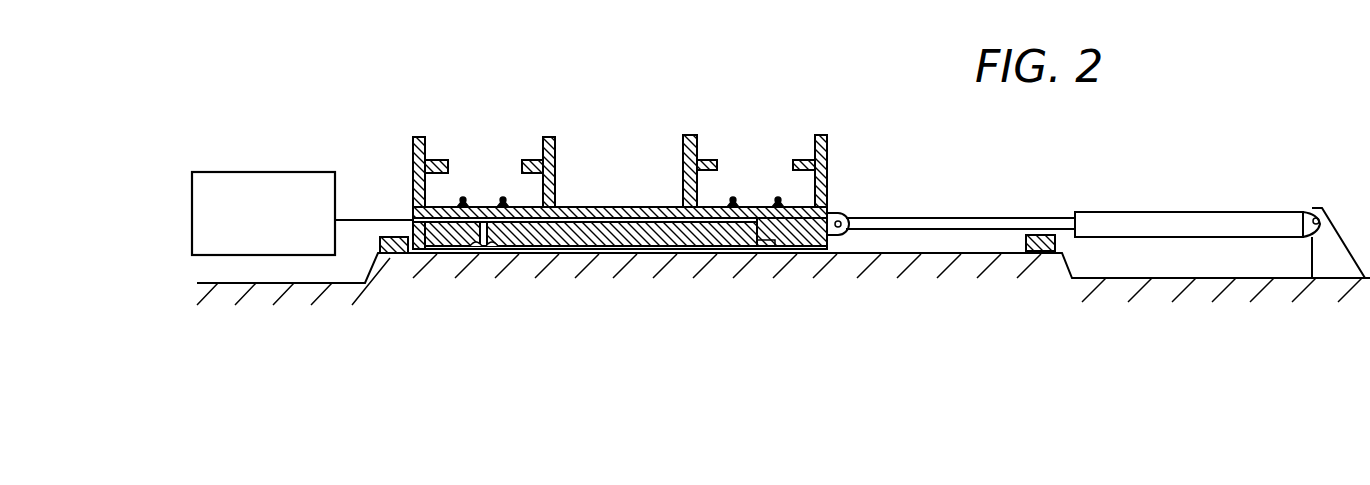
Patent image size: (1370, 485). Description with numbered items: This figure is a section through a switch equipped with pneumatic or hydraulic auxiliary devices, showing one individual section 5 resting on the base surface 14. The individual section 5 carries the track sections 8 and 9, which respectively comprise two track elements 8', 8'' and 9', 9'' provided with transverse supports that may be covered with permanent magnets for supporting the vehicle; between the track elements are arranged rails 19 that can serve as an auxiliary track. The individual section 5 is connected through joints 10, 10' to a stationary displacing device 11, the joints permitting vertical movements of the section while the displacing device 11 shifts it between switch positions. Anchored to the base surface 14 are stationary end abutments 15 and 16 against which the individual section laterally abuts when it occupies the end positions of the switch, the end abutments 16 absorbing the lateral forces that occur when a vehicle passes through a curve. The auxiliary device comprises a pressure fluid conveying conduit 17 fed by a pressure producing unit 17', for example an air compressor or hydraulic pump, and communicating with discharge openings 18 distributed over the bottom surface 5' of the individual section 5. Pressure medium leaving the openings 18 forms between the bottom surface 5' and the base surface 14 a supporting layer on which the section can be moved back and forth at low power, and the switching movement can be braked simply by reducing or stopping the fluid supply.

The individual section 5 is at (618, 248).
The bottom surface 5' is at (803, 275).
The track section 8 is at (486, 144).
The track element 8' is at (457, 145).
The track element 8'' is at (511, 167).
The straight driving track section 9 is at (780, 150).
The track element 9' is at (684, 135).
The track element 9'' is at (808, 132).
The joint 10 is at (951, 208).
The joint 10' is at (1341, 215).
The stationary displacing device 11 is at (1108, 218).
The base surface 14 is at (937, 253).
The stationary end abutment 15 is at (394, 237).
The stationary end abutment 16 is at (1038, 253).
The pressure fluid conveying conduit 17 is at (445, 278).
The pressure producing unit 17' is at (278, 182).
The discharge opening 18 is at (480, 247).
The rail 19 is at (778, 205).